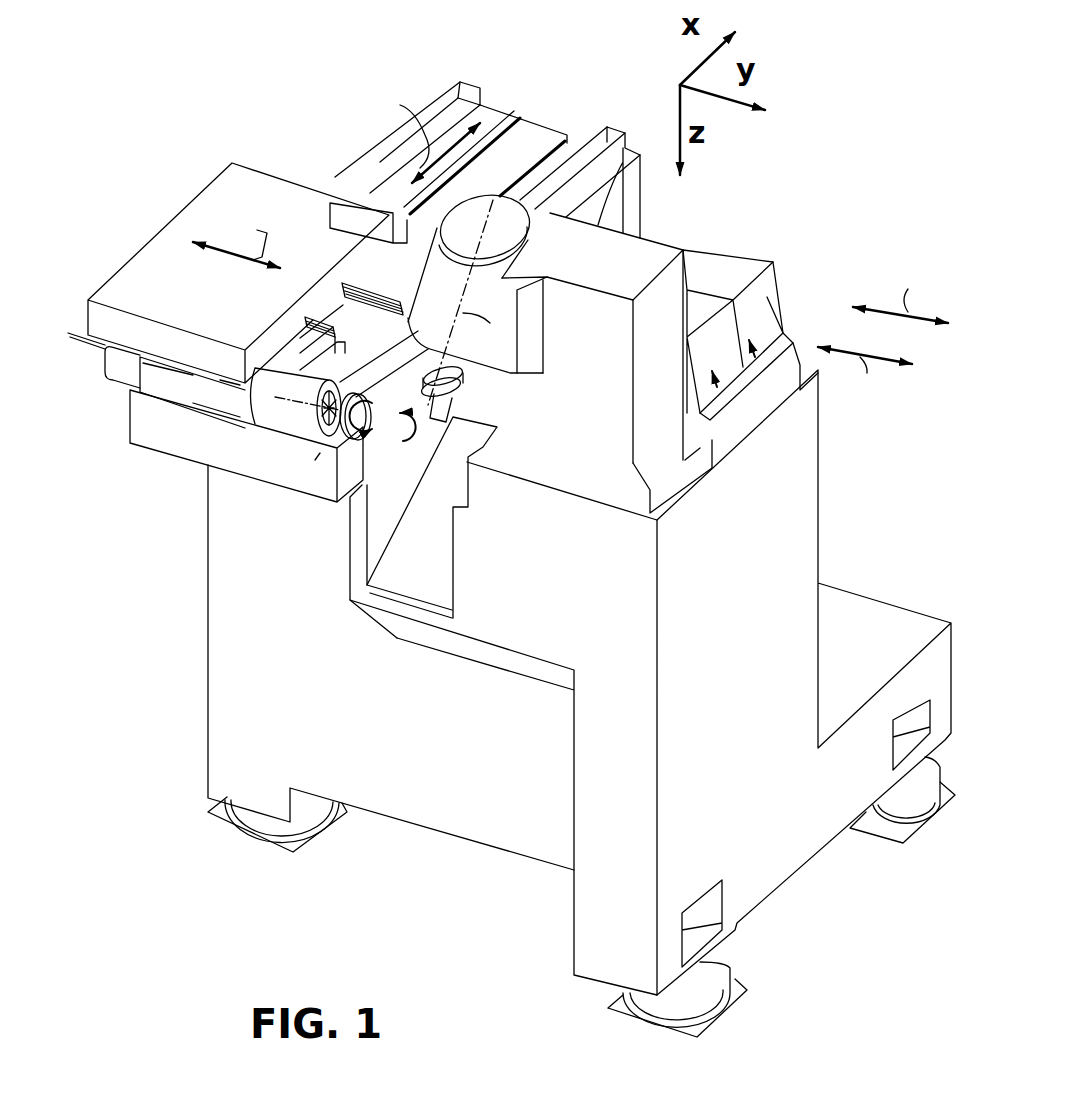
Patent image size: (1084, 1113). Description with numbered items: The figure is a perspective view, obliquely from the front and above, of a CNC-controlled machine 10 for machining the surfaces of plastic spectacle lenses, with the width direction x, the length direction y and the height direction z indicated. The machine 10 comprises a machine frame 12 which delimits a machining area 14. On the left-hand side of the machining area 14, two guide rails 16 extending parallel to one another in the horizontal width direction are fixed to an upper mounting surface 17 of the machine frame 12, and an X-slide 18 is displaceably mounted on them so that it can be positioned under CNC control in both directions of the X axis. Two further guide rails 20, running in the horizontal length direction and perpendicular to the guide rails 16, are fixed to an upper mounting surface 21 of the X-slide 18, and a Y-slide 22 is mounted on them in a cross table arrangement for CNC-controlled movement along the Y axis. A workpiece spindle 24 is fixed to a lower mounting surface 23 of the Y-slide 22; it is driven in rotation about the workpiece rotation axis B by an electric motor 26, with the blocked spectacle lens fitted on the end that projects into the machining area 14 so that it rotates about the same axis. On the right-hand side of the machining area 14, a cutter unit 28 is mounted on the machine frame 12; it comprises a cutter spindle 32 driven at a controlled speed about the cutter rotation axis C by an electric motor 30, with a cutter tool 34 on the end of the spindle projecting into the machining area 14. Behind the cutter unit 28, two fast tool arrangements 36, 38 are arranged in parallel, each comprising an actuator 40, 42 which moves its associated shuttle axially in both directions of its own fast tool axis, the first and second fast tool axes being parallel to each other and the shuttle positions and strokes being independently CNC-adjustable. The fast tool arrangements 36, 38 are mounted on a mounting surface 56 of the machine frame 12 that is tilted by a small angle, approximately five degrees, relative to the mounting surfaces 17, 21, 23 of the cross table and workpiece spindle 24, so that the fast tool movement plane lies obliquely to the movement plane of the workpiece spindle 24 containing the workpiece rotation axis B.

The machine 10 is at (413, 842).
The machine frame 12 is at (580, 620).
The machining area 14 is at (393, 520).
The guide rails 16 is at (607, 140).
The upper mounting surface 17 is at (395, 212).
The X-slide 18 is at (403, 247).
The guide rails 20 is at (362, 268).
The upper mounting surface 21 is at (348, 247).
The Y-slide 22 is at (224, 312).
The lower mounting surface 23 is at (100, 347).
The workpiece spindle 24 is at (278, 415).
The electric motor 26 is at (110, 367).
The cutter unit 28 is at (548, 448).
The electric motor 30 is at (508, 240).
The cutter spindle 32 is at (467, 380).
The cutter tool 34 is at (460, 417).
The first fast tool arrangement 36 is at (715, 373).
The second fast tool arrangement 38 is at (763, 357).
The actuator 40 is at (700, 313).
The actuator 42 is at (767, 293).
The mounting surface 56 is at (790, 348).